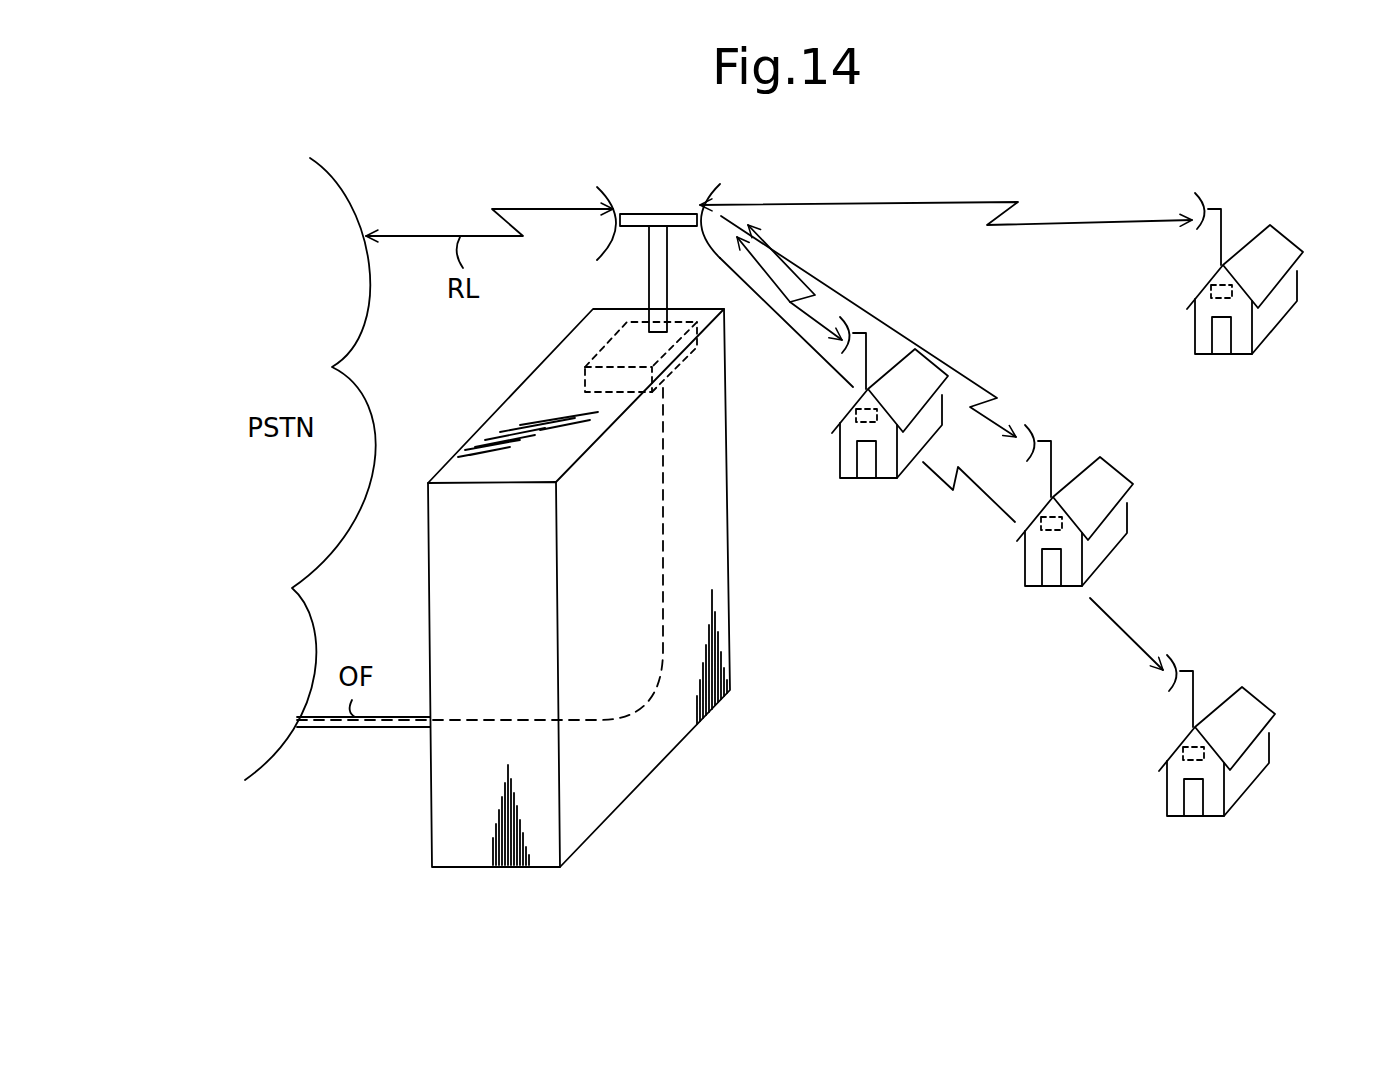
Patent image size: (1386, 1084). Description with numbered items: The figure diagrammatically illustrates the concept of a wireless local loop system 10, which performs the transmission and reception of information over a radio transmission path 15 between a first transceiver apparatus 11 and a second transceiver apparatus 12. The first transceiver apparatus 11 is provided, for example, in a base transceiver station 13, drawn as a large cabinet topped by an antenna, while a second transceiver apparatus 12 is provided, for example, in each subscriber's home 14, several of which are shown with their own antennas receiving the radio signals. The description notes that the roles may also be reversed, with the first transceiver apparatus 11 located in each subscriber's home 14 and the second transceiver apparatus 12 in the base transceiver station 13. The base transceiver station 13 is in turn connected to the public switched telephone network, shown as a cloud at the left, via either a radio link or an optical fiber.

The wireless local loop system 10 is at (850, 141).
The first transceiver apparatus 11 is at (683, 360).
The second transceiver apparatus 12 is at (853, 410).
The base transceiver station 13 is at (668, 755).
The subscriber's home 14 is at (883, 480).
The radio transmission path 15 is at (938, 204).